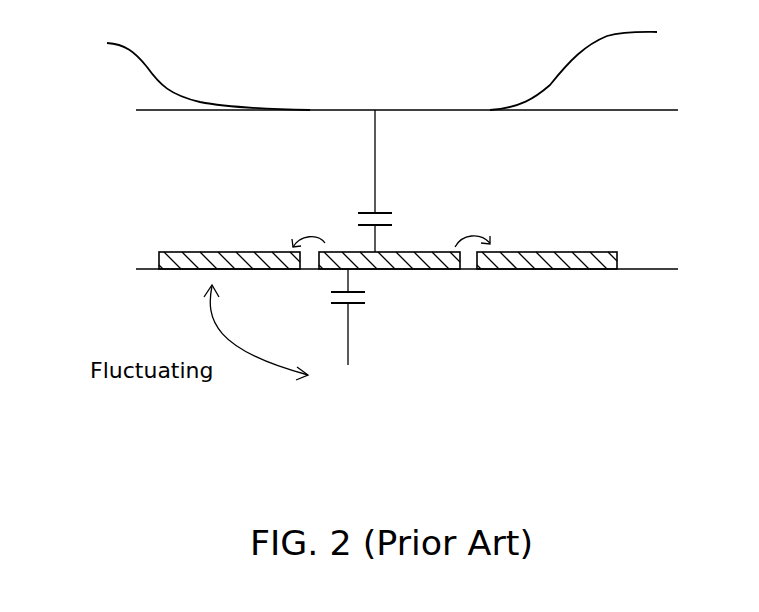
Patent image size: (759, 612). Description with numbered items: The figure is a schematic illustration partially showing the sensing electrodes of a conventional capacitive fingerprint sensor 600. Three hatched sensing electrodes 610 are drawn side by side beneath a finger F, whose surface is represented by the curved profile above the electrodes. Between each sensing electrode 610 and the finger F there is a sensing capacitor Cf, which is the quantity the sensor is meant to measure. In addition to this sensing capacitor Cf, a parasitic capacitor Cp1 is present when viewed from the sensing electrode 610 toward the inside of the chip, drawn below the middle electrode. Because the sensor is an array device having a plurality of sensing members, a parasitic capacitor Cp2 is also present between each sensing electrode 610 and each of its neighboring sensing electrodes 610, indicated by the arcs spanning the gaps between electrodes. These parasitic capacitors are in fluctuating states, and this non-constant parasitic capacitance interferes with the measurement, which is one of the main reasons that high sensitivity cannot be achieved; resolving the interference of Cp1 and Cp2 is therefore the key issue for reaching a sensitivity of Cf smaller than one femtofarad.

The capacitive fingerprint sensor 600 is at (439, 134).
The sensing electrode 610 is at (213, 258).
The finger F is at (573, 62).
The sensing capacitor Cf is at (390, 181).
The parasitic capacitor Cp1 is at (379, 317).
The parasitic capacitor Cp2 is at (373, 226).